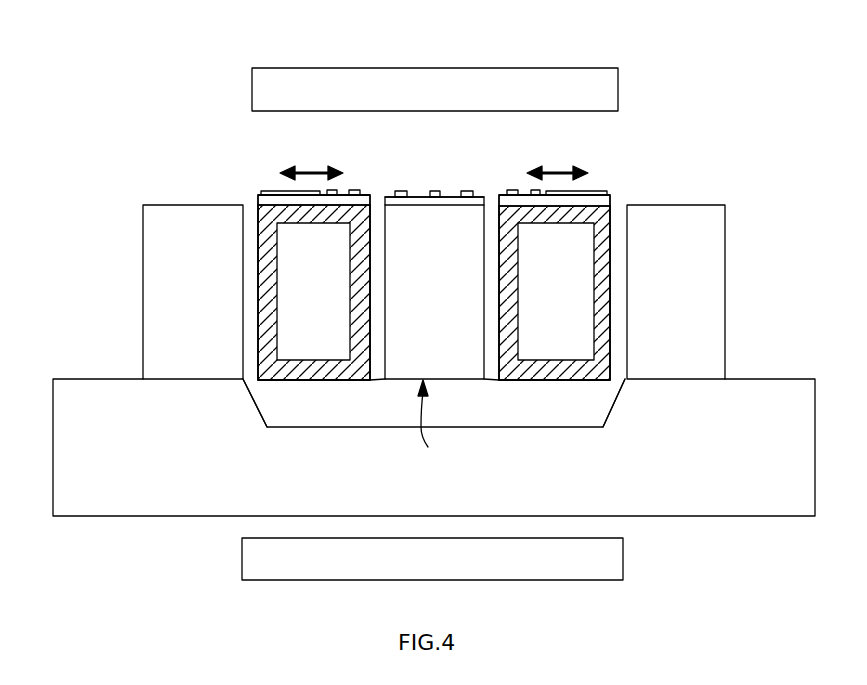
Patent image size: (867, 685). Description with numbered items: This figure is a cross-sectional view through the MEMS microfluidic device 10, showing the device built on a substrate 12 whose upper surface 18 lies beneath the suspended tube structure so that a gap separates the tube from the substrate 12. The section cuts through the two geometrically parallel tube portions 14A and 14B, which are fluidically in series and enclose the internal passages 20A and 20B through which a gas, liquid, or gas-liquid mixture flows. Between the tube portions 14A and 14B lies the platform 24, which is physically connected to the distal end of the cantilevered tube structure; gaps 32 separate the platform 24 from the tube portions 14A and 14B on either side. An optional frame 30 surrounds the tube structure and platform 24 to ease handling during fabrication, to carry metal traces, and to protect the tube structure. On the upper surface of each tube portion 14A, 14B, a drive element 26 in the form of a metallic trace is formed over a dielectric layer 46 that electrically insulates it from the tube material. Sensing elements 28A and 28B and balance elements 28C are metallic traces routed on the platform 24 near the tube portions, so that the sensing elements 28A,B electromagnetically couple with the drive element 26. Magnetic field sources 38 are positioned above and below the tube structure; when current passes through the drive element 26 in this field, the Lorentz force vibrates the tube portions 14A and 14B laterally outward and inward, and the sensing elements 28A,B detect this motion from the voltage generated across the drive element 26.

The MEMS microfluidic device 10 is at (700, 147).
The substrate 12 is at (735, 508).
The tube portion 14A is at (273, 381).
The tube portion 14B is at (593, 381).
The substrate surface 18 is at (472, 428).
The passage 20A is at (334, 300).
The passage 20B is at (578, 300).
The platform 24 is at (437, 427).
The drive element 26 is at (281, 196).
The sensing element 28A is at (512, 190).
The sensing element 28B is at (354, 190).
The balance element 28C is at (401, 191).
The sensing elements 28A,B is at (436, 190).
The frame 30 is at (148, 212).
The gap 32 is at (375, 374).
The magnetic field source 38 is at (618, 85).
The dielectric layer 46 is at (264, 194).